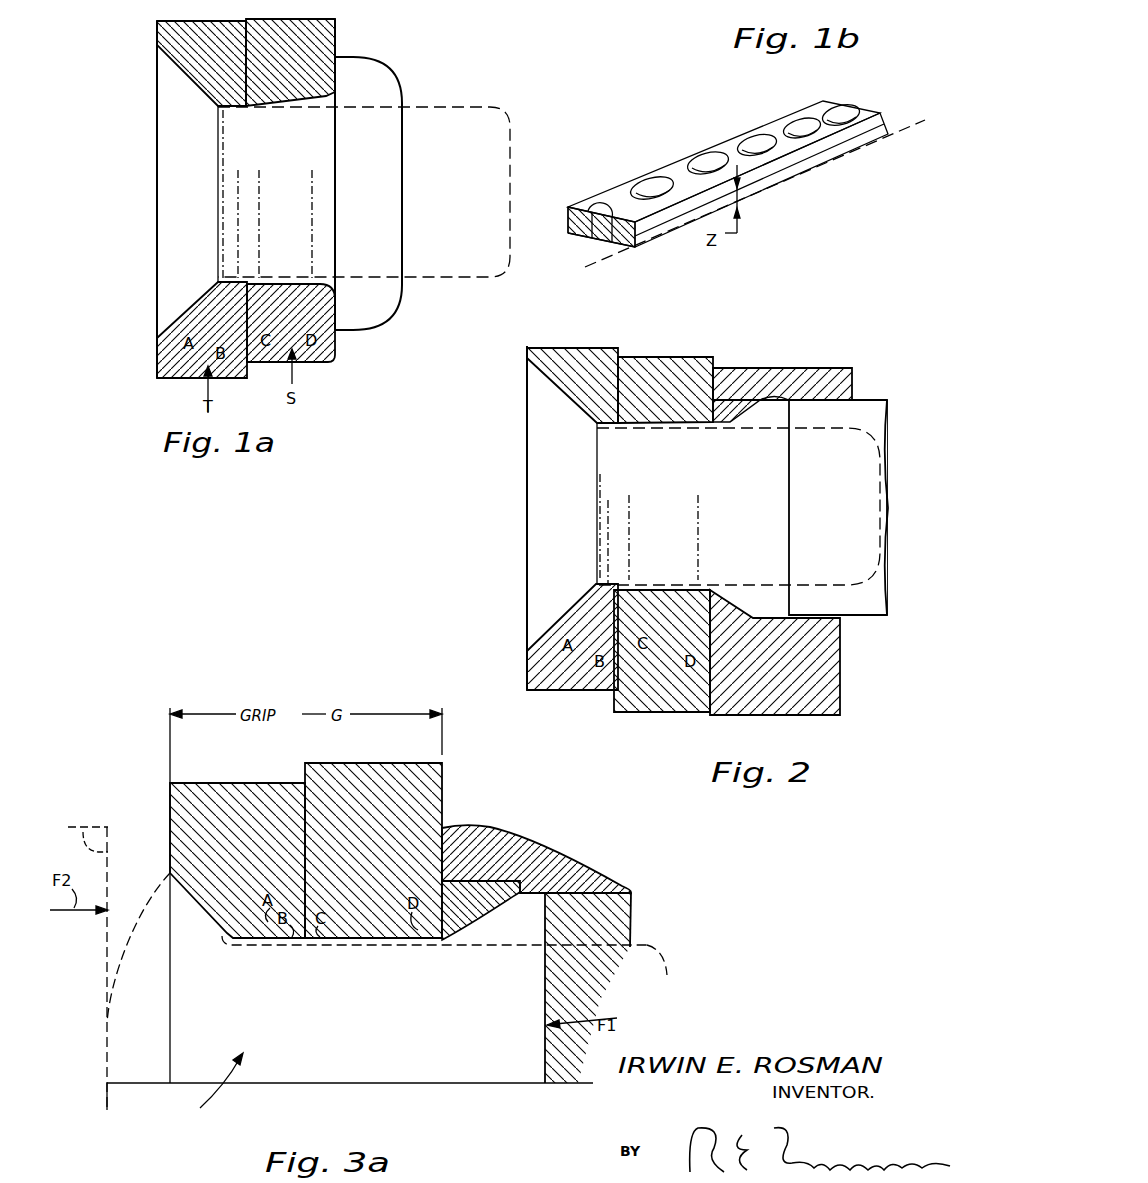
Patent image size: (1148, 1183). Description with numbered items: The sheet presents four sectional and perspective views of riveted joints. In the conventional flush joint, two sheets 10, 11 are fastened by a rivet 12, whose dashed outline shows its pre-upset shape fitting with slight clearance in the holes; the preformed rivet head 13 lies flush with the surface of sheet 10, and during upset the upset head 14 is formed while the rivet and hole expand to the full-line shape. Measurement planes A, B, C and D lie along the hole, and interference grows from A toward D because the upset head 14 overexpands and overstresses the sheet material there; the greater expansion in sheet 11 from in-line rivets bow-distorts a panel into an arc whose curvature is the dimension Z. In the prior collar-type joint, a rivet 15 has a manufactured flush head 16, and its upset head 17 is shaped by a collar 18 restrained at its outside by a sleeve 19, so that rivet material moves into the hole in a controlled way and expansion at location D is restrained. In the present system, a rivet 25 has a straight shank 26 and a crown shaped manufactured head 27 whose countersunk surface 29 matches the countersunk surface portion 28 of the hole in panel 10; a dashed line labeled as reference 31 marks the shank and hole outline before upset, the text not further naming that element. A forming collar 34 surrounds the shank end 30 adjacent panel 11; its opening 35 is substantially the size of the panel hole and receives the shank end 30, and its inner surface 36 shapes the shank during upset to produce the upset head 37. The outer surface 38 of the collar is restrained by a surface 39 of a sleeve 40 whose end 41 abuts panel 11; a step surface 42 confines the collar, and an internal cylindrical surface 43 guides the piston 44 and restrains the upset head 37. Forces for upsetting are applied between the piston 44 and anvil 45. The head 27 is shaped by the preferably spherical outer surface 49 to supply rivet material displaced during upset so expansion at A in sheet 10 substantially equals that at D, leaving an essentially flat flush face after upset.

In FIG. 1A, the sheet 10 is at (165, 37).
In FIG. 1B, the sheet 10 is at (575, 233).
In FIG. 3A, the sheet 10 is at (237, 795).
In FIG. 1A, the sheet 11 is at (320, 31).
In FIG. 1B, the sheet 11 is at (620, 197).
In FIG. 3A, the sheet 11 is at (387, 778).
In FIG. 1A, the rivet 12 is at (248, 200).
In FIG. 1A, the preformed rivet head 13 is at (167, 137).
In FIG. 1A, the upset head 14 is at (373, 320).
In FIG. 1B, the upset head 14 is at (598, 203).
In FIG. 2, the rivet 15 is at (619, 528).
In FIG. 2, the manufactured flush head 16 is at (556, 492).
In FIG. 2, the upset head 17 is at (770, 505).
In FIG. 2, the collar 18 is at (733, 620).
In FIG. 2, the sleeve 19 is at (830, 718).
In FIG. 3A, the rivet 25 is at (210, 1088).
In FIG. 3A, the straight shank 26 is at (318, 1080).
In FIG. 3A, the crown shaped manufactured head 27 is at (137, 1030).
In FIG. 3A, the countersunk surface portion of the hole 28 is at (237, 925).
In FIG. 3A, the countersunk surface 29 is at (205, 922).
In FIG. 3A, the shank end 30 is at (655, 946).
In FIG. 3A, the shank surface 31 is at (278, 947).
In FIG. 3A, the forming collar 34 is at (543, 867).
In FIG. 3A, the collar opening 35 is at (443, 946).
In FIG. 3A, the inner surface of the collar 36 is at (480, 920).
In FIG. 3A, the upset head 37 is at (615, 894).
In FIG. 3A, the outer surface of the collar 38 is at (481, 921).
In FIG. 3A, the sleeve surface 39 is at (512, 833).
In FIG. 3A, the sleeve 40 is at (482, 827).
In FIG. 3A, the sleeve end 41 is at (470, 828).
In FIG. 3A, the step surface 42 is at (489, 892).
In FIG. 3A, the internal cylindrical surface 43 is at (605, 883).
In FIG. 3A, the piston 44 is at (575, 988).
In FIG. 3A, the anvil 45 is at (84, 826).
In FIG. 3A, the outer surface of the manufactured head 49 is at (117, 982).